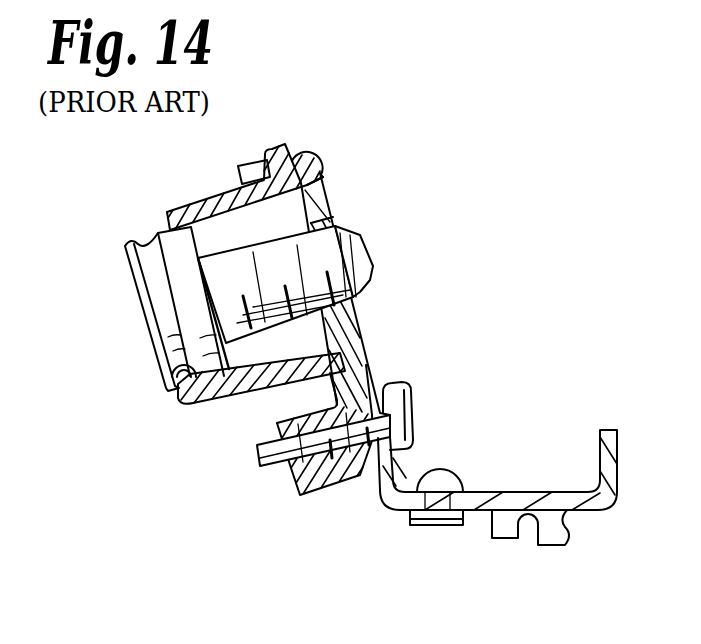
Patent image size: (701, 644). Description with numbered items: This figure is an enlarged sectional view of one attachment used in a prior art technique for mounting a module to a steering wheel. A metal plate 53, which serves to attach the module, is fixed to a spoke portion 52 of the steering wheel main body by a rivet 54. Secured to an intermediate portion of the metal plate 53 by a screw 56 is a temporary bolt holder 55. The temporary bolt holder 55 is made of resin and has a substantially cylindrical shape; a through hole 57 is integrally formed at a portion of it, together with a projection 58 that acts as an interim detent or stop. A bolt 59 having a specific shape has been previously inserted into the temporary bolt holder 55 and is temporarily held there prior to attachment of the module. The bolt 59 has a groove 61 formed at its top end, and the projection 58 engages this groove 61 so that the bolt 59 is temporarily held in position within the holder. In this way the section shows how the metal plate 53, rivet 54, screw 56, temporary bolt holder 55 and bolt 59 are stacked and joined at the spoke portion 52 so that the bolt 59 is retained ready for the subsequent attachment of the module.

The spoke portion 52 is at (505, 547).
The metal plate 53 is at (529, 490).
The rivet 54 is at (439, 472).
The temporary bolt holder 55 is at (200, 211).
The screw 56 is at (408, 386).
The through hole 57 is at (252, 398).
The projection 58 is at (172, 372).
The bolt 59 is at (128, 297).
The groove 61 is at (145, 245).